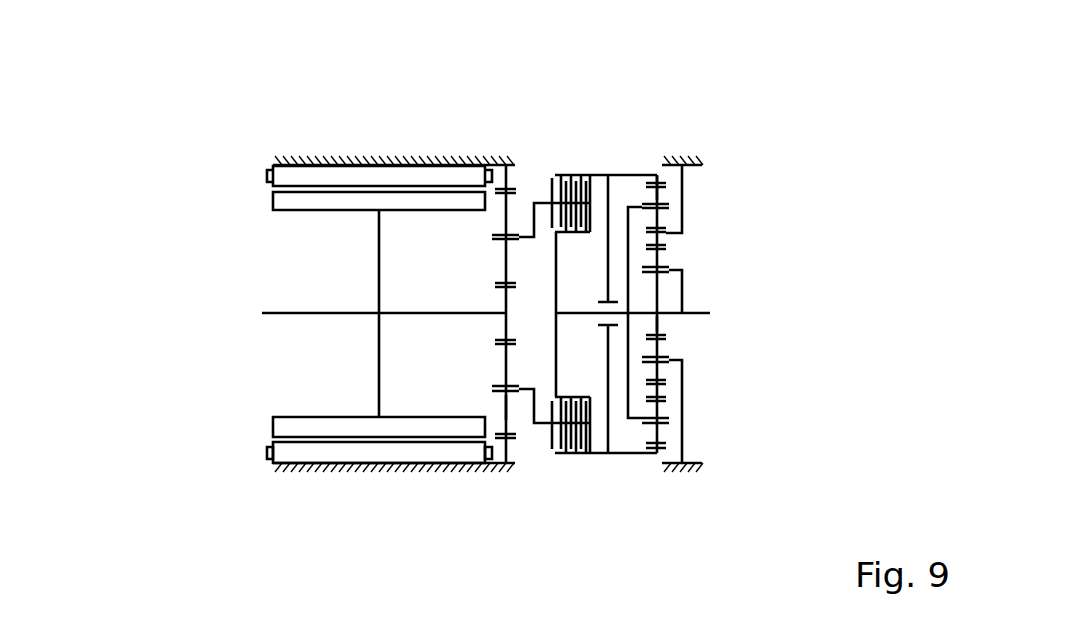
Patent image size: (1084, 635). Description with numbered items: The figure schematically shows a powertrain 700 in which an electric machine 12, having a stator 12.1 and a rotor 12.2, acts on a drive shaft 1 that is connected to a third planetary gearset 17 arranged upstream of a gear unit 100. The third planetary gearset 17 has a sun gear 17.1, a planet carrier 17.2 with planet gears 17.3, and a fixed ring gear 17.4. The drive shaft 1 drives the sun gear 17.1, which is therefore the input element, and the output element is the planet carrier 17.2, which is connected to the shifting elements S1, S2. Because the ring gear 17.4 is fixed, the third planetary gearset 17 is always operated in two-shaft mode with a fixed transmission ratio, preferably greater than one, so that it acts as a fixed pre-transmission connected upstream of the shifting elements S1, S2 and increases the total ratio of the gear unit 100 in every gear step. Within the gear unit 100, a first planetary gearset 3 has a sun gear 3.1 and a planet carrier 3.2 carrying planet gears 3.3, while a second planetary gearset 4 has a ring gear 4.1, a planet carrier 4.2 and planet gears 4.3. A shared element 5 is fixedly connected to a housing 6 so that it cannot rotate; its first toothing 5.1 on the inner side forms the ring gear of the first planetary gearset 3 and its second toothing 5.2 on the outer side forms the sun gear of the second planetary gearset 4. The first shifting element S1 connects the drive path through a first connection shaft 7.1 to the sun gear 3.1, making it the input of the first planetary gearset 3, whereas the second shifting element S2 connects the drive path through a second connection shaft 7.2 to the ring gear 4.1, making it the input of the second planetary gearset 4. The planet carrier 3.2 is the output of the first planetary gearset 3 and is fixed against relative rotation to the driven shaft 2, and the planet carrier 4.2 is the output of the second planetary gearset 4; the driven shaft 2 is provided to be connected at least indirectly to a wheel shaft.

The drive shaft 1 is at (283, 313).
The driven shaft 2 is at (710, 313).
The first planetary gearset 3 is at (670, 370).
The sun gear 3.1 is at (660, 324).
The planet carrier 3.2 is at (677, 360).
The planet gears 3.3 is at (663, 337).
The second planetary gearset 4 is at (690, 204).
The ring gear 4.1 is at (665, 183).
The planet carrier 4.2 is at (640, 205).
The planet gears 4.3 is at (657, 193).
The shared element 5 is at (660, 239).
The first toothing 5.1 is at (660, 245).
The second toothing 5.2 is at (660, 233).
The housing 6 is at (697, 470).
The first connection shaft 7.1 is at (641, 454).
The second connection shaft 7.2 is at (626, 417).
The electric machine 12 is at (275, 137).
The stator 12.1 is at (353, 175).
The rotor 12.2 is at (287, 202).
The third planetary gearset 17 is at (518, 218).
The sun gear 17.1 is at (506, 328).
The planet carrier 17.2 is at (522, 388).
The planet gears 17.3 is at (506, 407).
The ring gear 17.4 is at (497, 189).
The gear unit 100 is at (643, 130).
The powertrain 700 is at (700, 130).
The first shifting element S1 is at (563, 460).
The second shifting element S2 is at (597, 368).